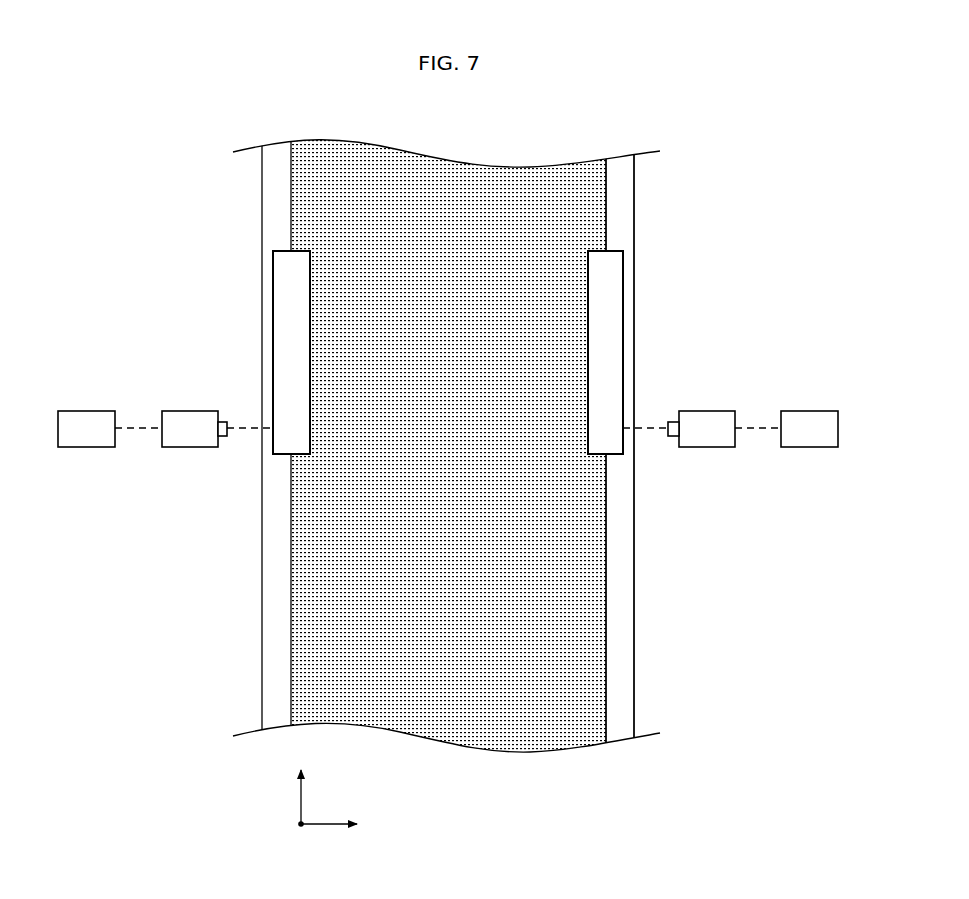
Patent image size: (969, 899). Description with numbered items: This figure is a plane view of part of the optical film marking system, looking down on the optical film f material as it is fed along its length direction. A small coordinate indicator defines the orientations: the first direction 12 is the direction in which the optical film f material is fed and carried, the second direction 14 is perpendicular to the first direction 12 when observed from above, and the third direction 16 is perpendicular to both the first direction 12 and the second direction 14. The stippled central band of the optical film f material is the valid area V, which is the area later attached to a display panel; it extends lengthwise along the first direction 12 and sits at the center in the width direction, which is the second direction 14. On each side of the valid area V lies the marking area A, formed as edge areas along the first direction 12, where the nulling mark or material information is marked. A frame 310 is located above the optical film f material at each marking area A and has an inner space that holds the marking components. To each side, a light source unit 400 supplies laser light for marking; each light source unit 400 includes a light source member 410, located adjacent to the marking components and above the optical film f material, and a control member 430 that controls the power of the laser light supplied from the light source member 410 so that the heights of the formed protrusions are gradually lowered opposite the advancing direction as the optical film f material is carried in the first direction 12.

The frame 310 is at (282, 273).
The light source unit 400 is at (448, 383).
The light source member 410 is at (193, 410).
The control member 430 is at (88, 410).
The valid area V is at (513, 208).
The marking area A is at (627, 187).
The optical film f is at (635, 578).
The first direction 12 is at (302, 783).
The second direction 14 is at (342, 824).
The third direction 16 is at (299, 826).